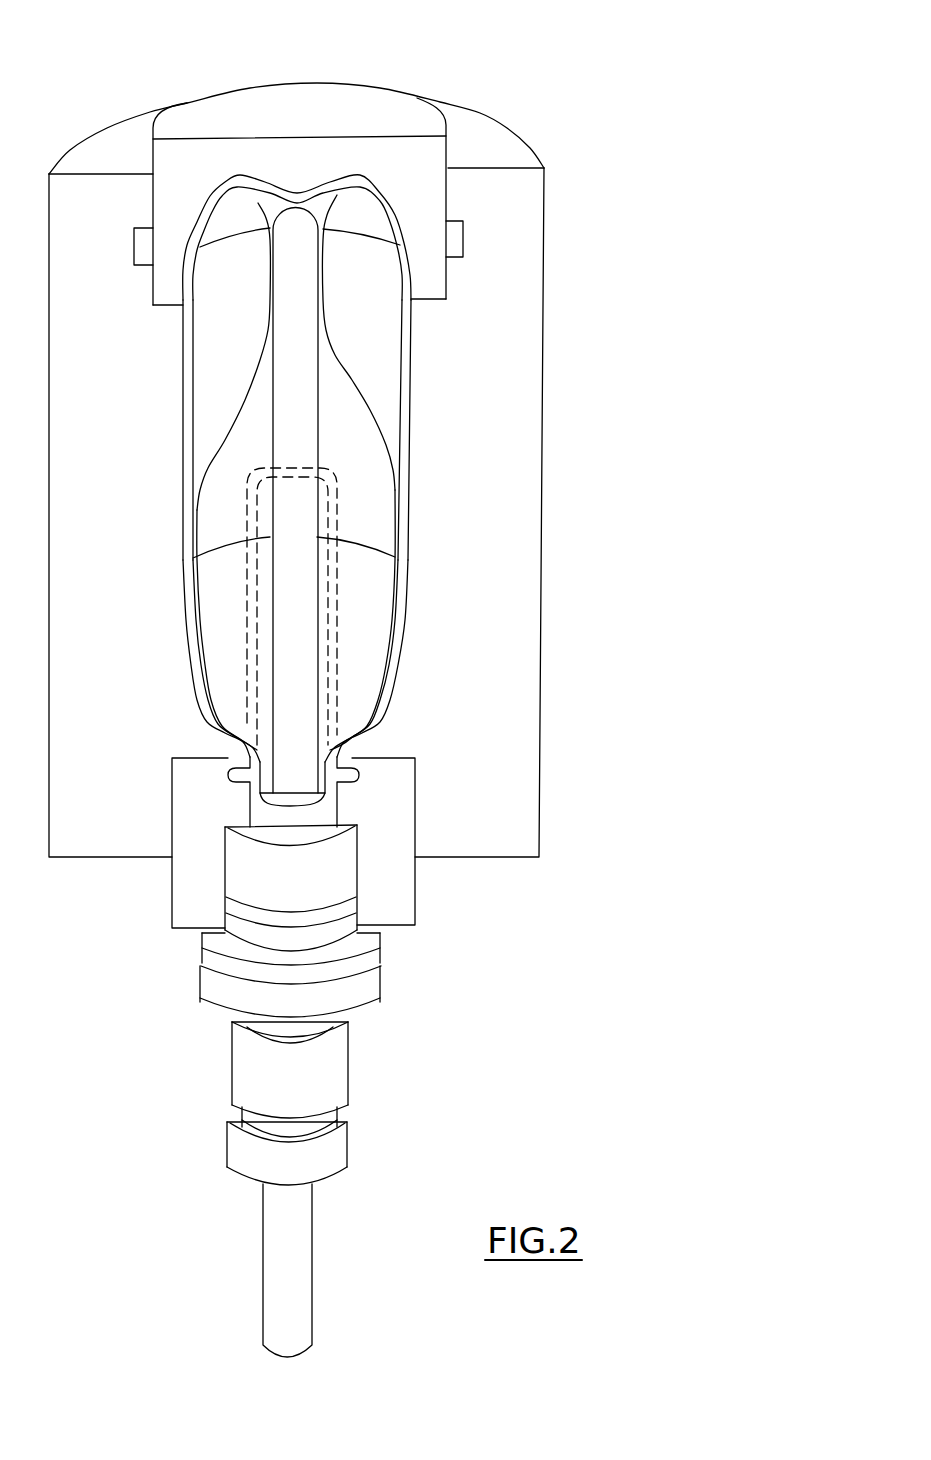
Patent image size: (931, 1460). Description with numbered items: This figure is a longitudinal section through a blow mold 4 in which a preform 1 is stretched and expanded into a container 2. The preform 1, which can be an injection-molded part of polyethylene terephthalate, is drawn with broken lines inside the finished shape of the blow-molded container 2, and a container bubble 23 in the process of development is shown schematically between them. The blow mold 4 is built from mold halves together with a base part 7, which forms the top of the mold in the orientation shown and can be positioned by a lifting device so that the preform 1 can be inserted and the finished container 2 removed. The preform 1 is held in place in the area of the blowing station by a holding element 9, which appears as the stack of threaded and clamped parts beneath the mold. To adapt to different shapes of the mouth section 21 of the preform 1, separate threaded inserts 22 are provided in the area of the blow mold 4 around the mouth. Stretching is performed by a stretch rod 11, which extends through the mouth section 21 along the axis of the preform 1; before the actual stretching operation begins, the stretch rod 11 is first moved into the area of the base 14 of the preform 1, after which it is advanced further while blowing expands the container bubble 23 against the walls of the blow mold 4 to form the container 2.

The preform 1 is at (335, 642).
The container 2 is at (408, 408).
The blow mold 4 is at (500, 478).
The base part 7 is at (385, 103).
The holding element 9 is at (368, 997).
The stretch rod 11 is at (263, 1282).
The base 14 is at (330, 472).
The mouth section 21 is at (338, 792).
The threaded inserts 22 is at (398, 883).
The container bubble 23 is at (350, 367).